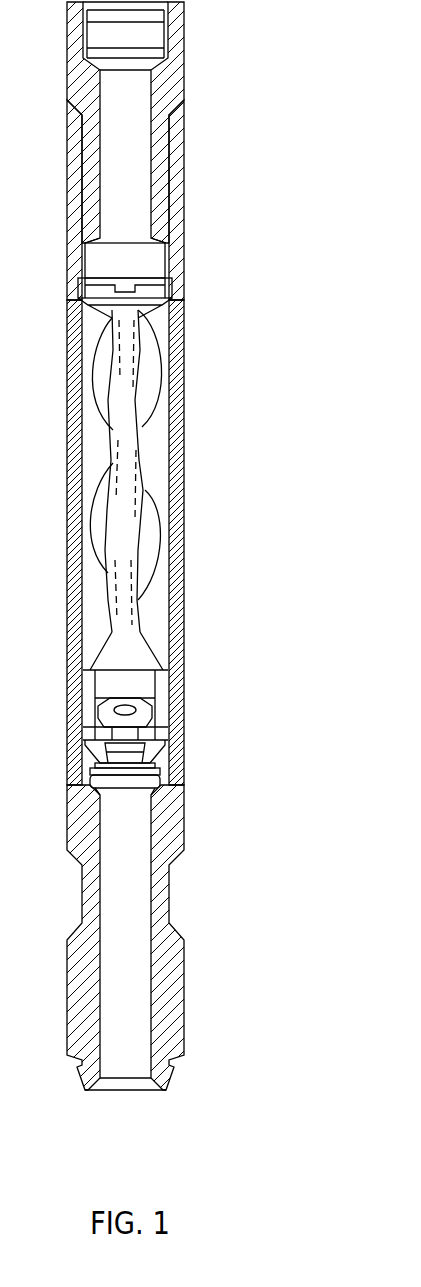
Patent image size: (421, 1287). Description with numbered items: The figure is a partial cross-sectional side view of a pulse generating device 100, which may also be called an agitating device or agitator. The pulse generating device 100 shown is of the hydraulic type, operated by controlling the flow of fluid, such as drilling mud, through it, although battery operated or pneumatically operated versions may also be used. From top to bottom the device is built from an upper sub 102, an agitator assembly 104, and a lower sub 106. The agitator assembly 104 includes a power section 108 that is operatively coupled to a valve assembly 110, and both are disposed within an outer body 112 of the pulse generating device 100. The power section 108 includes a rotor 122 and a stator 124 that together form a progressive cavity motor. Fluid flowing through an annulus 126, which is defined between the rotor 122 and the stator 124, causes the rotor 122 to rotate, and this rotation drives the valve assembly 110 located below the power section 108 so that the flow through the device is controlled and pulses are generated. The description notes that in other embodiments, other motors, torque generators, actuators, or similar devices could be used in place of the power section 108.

The pulse generating device 100 is at (222, 293).
The upper sub 102 is at (163, 132).
The agitator assembly 104 is at (197, 513).
The lower sub 106 is at (162, 880).
The power section 108 is at (173, 536).
The valve assembly 110 is at (150, 712).
The outer body 112 is at (173, 376).
The rotor 122 is at (128, 437).
The stator 124 is at (153, 476).
The annulus 126 is at (140, 565).